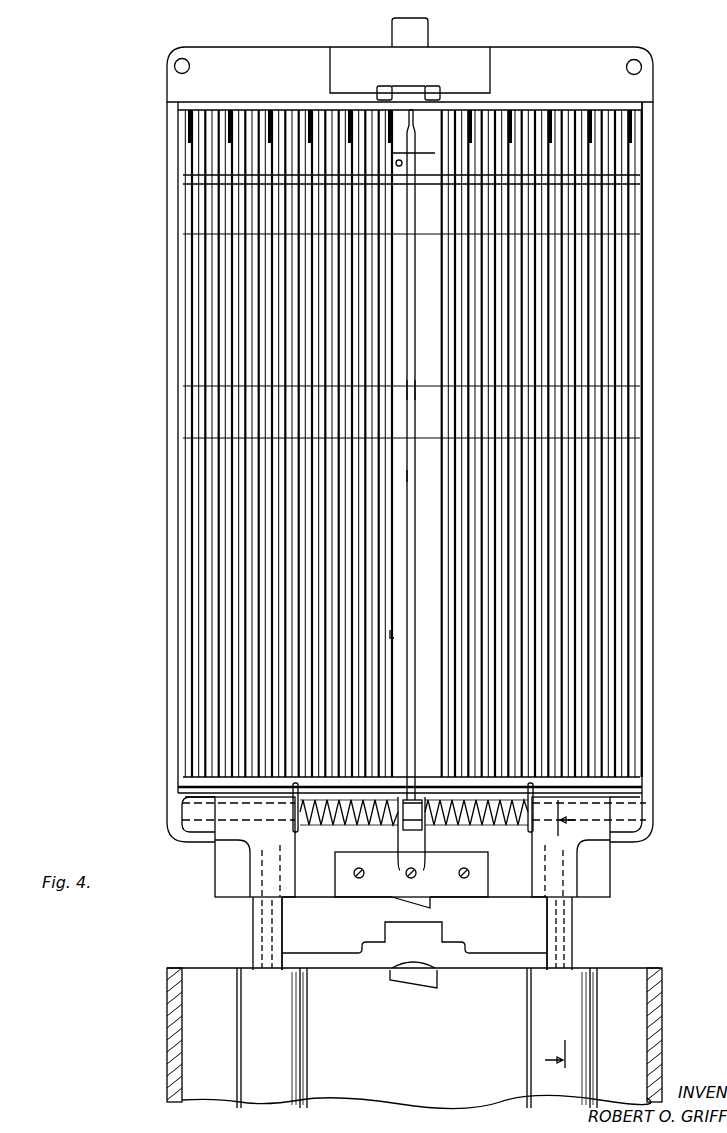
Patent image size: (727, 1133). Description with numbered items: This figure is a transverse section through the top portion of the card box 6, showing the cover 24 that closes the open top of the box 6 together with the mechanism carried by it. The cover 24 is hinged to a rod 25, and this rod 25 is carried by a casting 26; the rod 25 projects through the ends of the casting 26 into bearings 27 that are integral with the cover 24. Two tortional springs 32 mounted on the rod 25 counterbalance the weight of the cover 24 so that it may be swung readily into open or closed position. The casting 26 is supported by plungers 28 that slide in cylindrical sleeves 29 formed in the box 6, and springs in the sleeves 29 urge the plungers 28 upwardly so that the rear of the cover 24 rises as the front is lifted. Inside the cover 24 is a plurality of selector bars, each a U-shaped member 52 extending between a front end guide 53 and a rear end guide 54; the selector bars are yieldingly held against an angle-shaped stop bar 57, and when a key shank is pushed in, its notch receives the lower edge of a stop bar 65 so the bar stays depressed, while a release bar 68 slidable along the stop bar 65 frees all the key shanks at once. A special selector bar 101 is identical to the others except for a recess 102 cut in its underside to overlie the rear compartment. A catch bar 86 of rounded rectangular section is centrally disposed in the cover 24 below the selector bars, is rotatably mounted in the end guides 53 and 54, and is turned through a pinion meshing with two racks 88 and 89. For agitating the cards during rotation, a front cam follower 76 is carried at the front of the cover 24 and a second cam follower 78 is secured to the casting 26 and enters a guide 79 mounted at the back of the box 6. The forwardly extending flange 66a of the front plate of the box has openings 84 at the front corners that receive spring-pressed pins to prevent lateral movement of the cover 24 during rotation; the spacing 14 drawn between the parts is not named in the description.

The box 6 is at (662, 1020).
The spacing dimension 14 is at (572, 934).
The cover 24 is at (653, 625).
The rod 25 is at (488, 820).
The casting 26 is at (252, 880).
The bearings 27 is at (645, 796).
The plungers 28 is at (258, 928).
The cylindrical sleeves 29 is at (255, 1025).
The tortional springs 32 is at (398, 839).
The U-shaped member 52 is at (190, 312).
The end guide 53 is at (627, 106).
The end guide 54 is at (638, 780).
The angle-shaped stop bar 57 is at (423, 394).
The stop bar 65 is at (186, 184).
The forwardly extending flange 66a is at (266, 56).
The release bar 68 is at (186, 173).
The front cam follower 76 is at (428, 36).
The second cam follower 78 is at (400, 906).
The guide 79 is at (425, 932).
The openings 84 is at (186, 59).
The catch bar 86 is at (415, 322).
The rack 88 is at (385, 87).
The rack 89 is at (437, 87).
The special selector bar 101 is at (393, 483).
The recess 102 is at (393, 638).